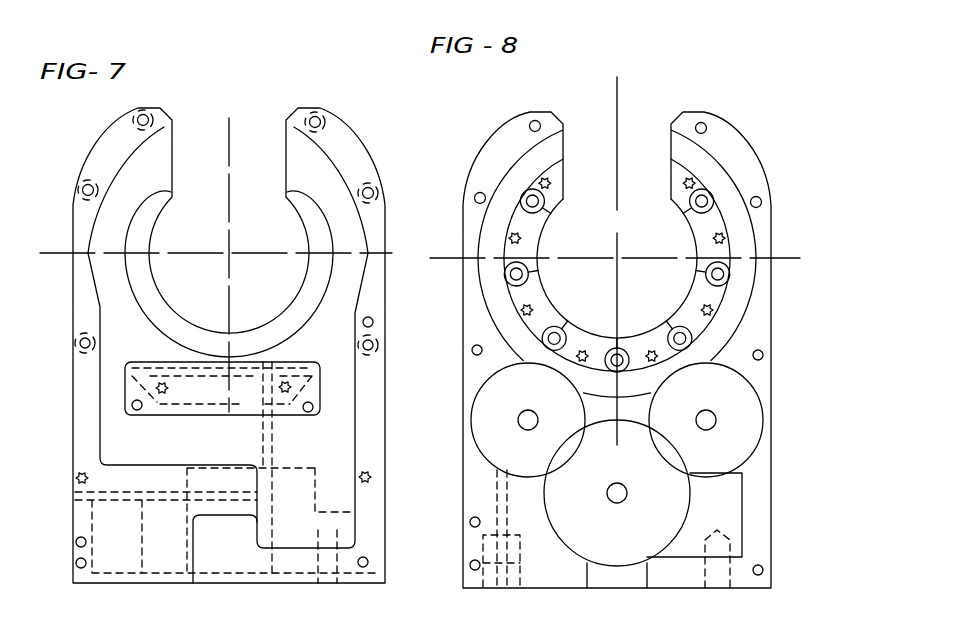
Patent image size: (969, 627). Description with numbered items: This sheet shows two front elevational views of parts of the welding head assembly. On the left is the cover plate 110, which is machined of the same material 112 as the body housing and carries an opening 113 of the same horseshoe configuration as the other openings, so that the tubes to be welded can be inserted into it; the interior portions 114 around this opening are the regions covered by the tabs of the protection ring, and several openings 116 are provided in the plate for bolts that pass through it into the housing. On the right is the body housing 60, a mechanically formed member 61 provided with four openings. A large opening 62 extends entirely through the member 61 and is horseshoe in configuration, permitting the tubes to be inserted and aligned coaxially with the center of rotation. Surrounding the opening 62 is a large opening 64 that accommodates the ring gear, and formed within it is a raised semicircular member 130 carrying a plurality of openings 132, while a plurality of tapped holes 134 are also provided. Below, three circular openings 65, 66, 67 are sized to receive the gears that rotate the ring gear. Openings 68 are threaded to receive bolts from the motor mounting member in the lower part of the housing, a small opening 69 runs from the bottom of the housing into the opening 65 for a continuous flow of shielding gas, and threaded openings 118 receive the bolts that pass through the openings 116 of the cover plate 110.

In FIG. 7, the cover plate 110 is at (229, 297).
In FIG. 7, the material 112 is at (360, 164).
In FIG. 7, the opening 113 is at (198, 272).
In FIG. 7, the interior portions 114 is at (285, 158).
In FIG. 7, the openings 116 is at (80, 338).
In FIG. 8, the body housing 60 is at (762, 148).
In FIG. 8, the mechanically formed member 61 is at (772, 537).
In FIG. 8, the large opening 62 is at (630, 138).
In FIG. 8, the large opening 64 is at (478, 204).
In FIG. 8, the opening 65 is at (490, 442).
In FIG. 8, the opening 66 is at (752, 418).
In FIG. 8, the opening 67 is at (680, 500).
In FIG. 8, the openings 68 is at (475, 565).
In FIG. 8, the small opening 69 is at (497, 482).
In FIG. 8, the threaded openings 118 is at (483, 543).
In FIG. 8, the raised semicircular member 130 is at (724, 222).
In FIG. 8, the openings 132 is at (808, 283).
In FIG. 8, the tapped holes 134 is at (690, 172).